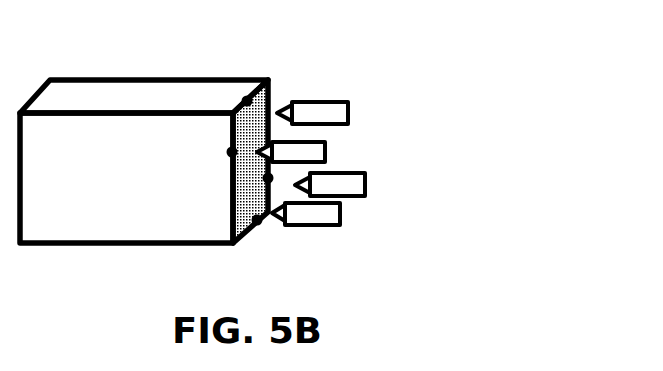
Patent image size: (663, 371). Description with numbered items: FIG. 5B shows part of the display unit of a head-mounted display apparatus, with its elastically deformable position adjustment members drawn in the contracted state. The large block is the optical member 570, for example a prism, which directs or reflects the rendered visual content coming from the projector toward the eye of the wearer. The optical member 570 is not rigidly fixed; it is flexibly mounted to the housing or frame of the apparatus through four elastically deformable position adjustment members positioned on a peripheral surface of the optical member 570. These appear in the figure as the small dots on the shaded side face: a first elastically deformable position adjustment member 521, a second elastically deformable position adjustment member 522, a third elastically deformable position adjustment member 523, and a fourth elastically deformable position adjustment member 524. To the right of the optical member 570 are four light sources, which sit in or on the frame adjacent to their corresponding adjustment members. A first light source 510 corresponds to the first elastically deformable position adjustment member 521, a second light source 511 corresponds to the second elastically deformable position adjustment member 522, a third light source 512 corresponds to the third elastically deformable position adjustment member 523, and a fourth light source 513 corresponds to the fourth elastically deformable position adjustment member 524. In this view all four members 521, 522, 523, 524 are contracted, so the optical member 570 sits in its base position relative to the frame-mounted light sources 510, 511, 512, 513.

The optical member 570 is at (158, 189).
The first light source 510 is at (348, 113).
The third light source 512 is at (325, 148).
The second light source 511 is at (365, 195).
The fourth light source 513 is at (340, 217).
The first elastically deformable position adjustment member 521 is at (247, 101).
The third elastically deformable position adjustment member 523 is at (232, 152).
The second elastically deformable position adjustment member 522 is at (268, 178).
The fourth elastically deformable position adjustment member 524 is at (257, 220).